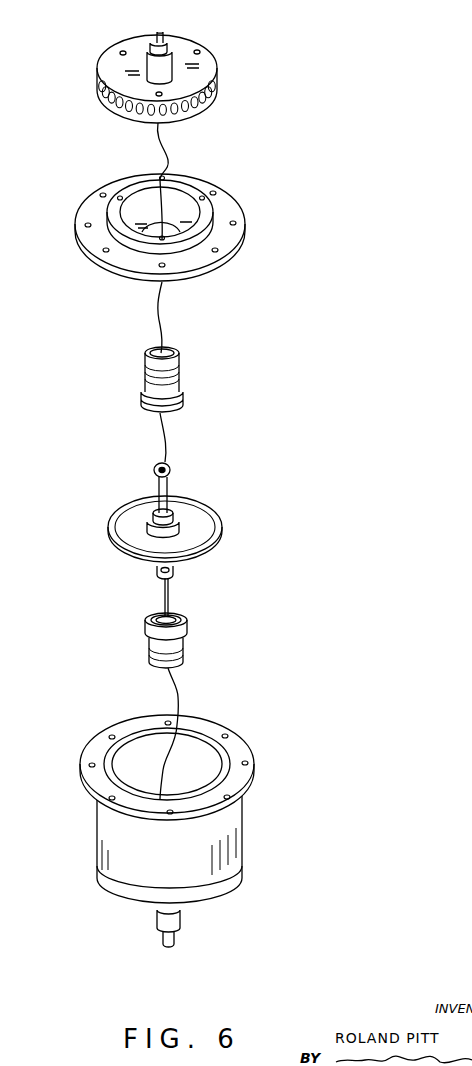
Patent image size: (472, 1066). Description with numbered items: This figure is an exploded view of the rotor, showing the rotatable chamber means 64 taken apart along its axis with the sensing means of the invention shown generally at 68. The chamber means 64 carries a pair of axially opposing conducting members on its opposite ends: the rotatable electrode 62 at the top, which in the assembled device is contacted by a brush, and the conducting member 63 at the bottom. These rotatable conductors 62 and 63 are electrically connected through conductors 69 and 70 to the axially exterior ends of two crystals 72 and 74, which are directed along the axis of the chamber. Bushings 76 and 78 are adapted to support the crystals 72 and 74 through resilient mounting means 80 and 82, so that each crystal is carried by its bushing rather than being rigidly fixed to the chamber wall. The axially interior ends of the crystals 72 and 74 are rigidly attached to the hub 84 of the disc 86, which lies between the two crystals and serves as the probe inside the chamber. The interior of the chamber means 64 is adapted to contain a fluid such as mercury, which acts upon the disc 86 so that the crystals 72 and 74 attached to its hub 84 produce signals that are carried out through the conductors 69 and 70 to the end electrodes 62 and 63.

The rotatable electrode 62 is at (163, 33).
The conductor 69 is at (168, 163).
The bushing 76 is at (146, 367).
The resilient mounting means 80 is at (171, 469).
The crystal 72 is at (170, 501).
The hub 84 is at (150, 518).
The sensing means 68 is at (104, 535).
The disc 86 is at (222, 530).
The resilient mounting means 82 is at (157, 573).
The crystal 74 is at (175, 572).
The bushing 78 is at (148, 660).
The conductor 70 is at (180, 697).
The rotatable chamber means 64 is at (110, 835).
The conducting member 63 is at (176, 937).